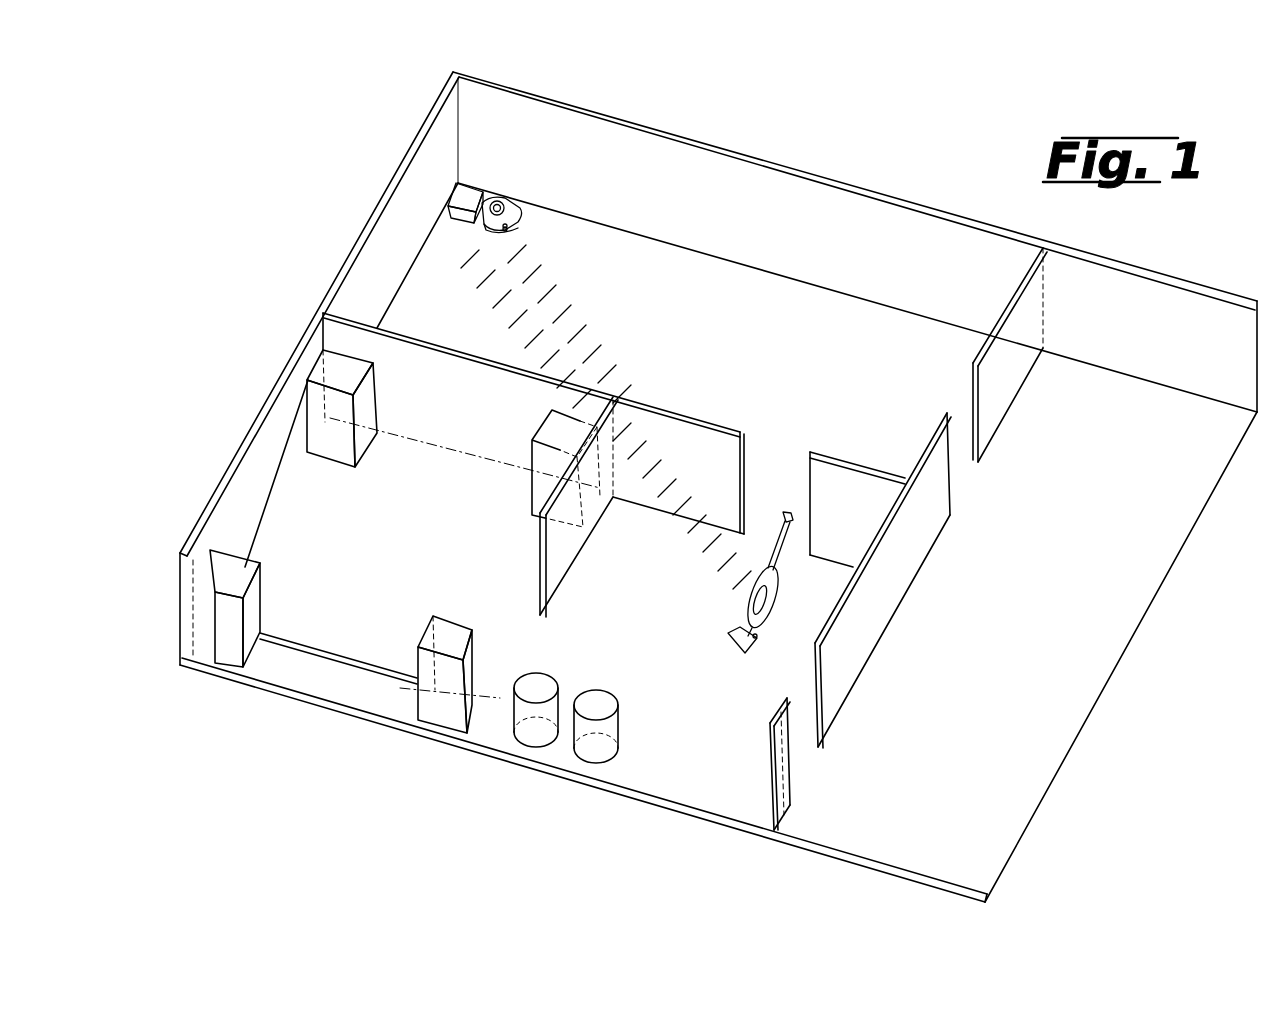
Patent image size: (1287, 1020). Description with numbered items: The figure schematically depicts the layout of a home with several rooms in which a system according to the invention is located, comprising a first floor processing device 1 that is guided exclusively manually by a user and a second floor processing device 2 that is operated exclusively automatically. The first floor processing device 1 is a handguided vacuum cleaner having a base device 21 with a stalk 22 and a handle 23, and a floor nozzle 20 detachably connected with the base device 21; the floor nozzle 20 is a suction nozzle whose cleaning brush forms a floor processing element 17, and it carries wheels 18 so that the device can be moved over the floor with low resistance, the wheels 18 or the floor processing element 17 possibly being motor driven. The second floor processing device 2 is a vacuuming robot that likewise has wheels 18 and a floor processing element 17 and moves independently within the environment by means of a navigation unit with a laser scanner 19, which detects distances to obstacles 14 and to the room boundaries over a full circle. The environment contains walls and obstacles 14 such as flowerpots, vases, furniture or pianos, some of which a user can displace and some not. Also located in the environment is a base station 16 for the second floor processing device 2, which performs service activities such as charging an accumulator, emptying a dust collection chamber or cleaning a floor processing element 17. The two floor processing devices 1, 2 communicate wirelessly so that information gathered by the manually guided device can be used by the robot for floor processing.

The first floor processing device 1 is at (806, 635).
The second floor processing device 2 is at (470, 150).
The obstacles 14 is at (545, 491).
The base station 16 is at (470, 202).
The floor processing element 17 is at (504, 228).
The wheels 18 is at (504, 226).
The laser scanner 19 is at (500, 206).
The floor nozzle 20 is at (745, 645).
The base device 21 is at (770, 606).
The stalk 22 is at (777, 556).
The handle 23 is at (792, 517).